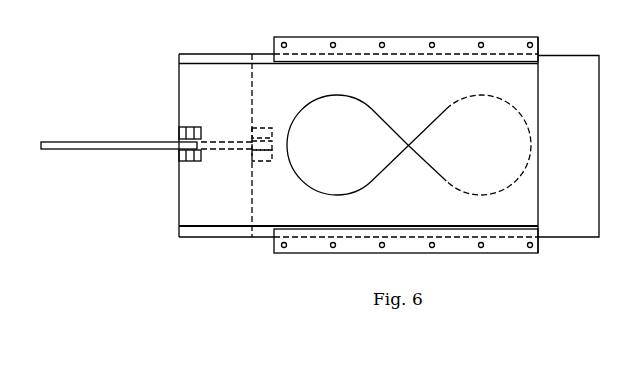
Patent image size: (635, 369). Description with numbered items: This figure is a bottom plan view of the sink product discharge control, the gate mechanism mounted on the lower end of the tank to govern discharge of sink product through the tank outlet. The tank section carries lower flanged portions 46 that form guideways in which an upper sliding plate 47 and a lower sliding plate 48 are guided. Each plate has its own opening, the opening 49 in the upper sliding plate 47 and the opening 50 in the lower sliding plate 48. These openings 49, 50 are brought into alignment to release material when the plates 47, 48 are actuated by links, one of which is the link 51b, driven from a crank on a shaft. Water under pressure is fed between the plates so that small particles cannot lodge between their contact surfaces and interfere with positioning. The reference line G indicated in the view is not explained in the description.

The lower flanged portions 46 is at (540, 249).
The upper sliding plate 47 is at (568, 147).
The lower sliding plate 48 is at (358, 145).
The opening 49 is at (443, 182).
The opening 50 is at (366, 145).
The link 51b is at (123, 150).
The reference line G is at (252, 237).